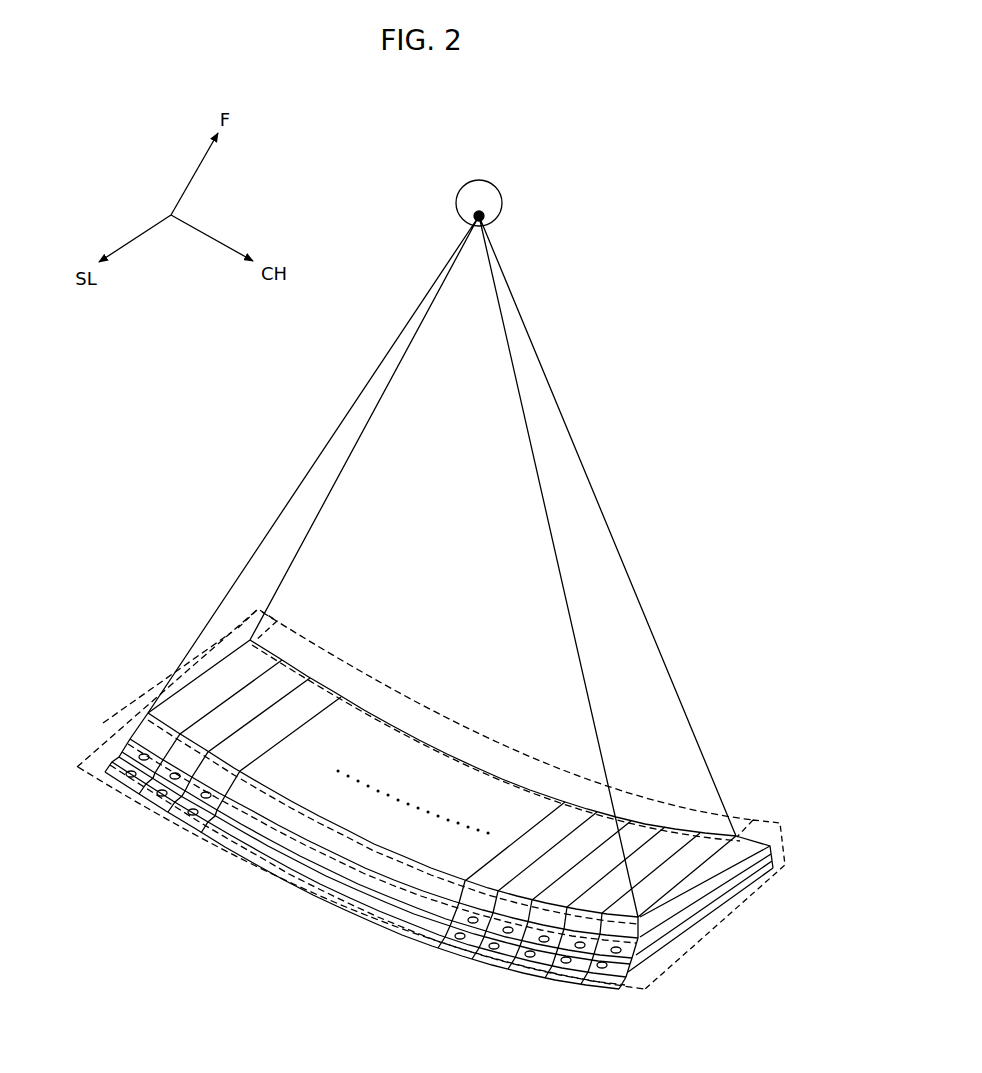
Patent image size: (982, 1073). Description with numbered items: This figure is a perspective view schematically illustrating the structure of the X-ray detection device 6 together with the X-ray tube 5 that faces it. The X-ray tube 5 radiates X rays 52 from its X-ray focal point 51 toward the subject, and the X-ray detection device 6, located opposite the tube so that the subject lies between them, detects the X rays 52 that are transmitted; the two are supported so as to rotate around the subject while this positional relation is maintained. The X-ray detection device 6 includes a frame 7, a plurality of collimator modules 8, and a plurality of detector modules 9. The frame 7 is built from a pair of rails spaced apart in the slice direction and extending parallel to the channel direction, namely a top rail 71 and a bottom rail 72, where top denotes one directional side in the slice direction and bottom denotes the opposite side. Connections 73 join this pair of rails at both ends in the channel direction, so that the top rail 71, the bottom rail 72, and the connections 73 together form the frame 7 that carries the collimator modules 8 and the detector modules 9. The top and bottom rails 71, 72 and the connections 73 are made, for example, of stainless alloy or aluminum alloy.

The X-ray tube 5 is at (462, 187).
The X-ray focal point 51 is at (472, 217).
The X rays 52 is at (360, 393).
The X-ray detection device 6 is at (145, 658).
The frame 7 is at (120, 710).
The top rail 71 is at (256, 882).
The bottom rail 72 is at (447, 733).
The connections 73 is at (227, 619).
The collimator modules 8 is at (552, 924).
The detector modules 9 is at (595, 984).